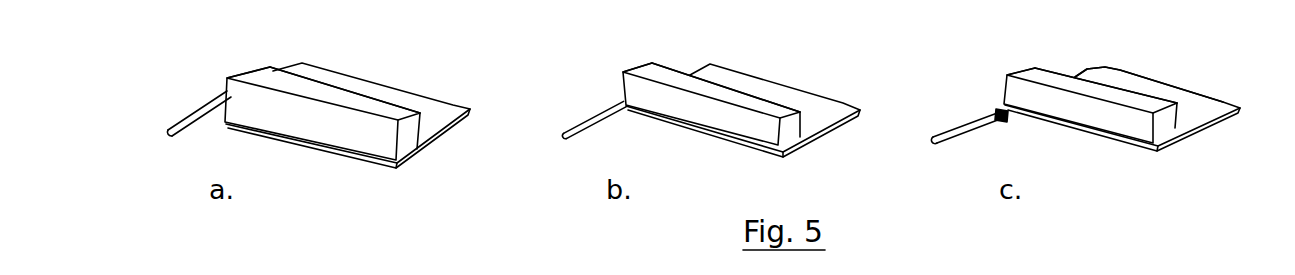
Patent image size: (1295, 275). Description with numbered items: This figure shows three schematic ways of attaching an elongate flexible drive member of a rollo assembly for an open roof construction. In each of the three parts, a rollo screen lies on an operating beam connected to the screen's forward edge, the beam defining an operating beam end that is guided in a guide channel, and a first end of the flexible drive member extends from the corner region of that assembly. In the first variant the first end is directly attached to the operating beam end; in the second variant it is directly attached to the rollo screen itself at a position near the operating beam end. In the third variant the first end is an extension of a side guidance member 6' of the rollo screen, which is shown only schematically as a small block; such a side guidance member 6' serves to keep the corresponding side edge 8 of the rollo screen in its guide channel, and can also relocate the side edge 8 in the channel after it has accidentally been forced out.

The side guidance member 6' is at (1025, 138).
The side edge 8 is at (1077, 78).